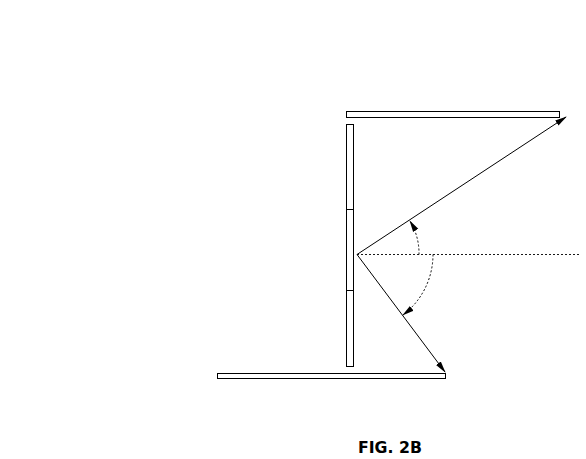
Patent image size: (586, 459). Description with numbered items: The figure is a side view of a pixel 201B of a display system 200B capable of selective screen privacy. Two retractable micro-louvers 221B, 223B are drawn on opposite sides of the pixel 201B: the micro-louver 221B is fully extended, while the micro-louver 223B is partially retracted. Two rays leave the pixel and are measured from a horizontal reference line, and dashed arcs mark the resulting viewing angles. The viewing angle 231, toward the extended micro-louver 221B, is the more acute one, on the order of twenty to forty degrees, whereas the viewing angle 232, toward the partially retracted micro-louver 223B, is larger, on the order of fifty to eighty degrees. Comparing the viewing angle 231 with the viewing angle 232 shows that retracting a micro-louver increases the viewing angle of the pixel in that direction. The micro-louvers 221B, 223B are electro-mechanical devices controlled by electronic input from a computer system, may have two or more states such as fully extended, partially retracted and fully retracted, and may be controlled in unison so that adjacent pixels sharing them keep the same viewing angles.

The system 200B is at (250, 79).
The pixel 201B is at (344, 125).
The micro-louver 221B is at (473, 110).
The micro-louver 223B is at (374, 381).
The viewing angle 231 is at (419, 233).
The viewing angle 232 is at (432, 288).